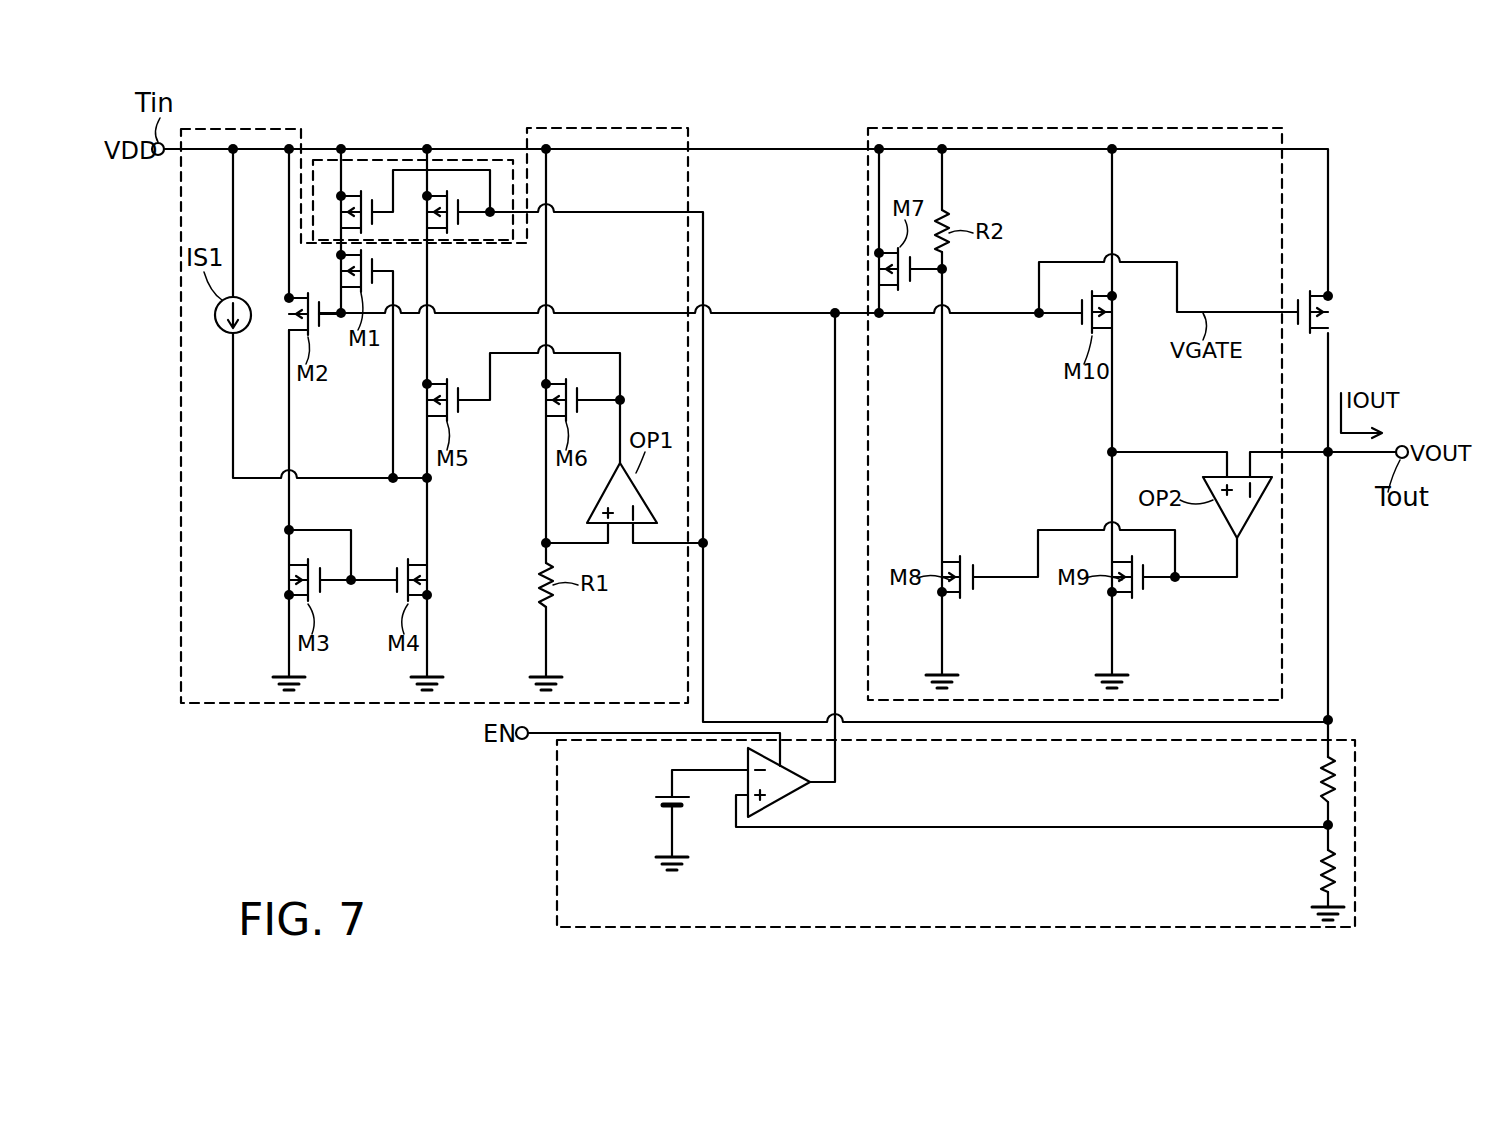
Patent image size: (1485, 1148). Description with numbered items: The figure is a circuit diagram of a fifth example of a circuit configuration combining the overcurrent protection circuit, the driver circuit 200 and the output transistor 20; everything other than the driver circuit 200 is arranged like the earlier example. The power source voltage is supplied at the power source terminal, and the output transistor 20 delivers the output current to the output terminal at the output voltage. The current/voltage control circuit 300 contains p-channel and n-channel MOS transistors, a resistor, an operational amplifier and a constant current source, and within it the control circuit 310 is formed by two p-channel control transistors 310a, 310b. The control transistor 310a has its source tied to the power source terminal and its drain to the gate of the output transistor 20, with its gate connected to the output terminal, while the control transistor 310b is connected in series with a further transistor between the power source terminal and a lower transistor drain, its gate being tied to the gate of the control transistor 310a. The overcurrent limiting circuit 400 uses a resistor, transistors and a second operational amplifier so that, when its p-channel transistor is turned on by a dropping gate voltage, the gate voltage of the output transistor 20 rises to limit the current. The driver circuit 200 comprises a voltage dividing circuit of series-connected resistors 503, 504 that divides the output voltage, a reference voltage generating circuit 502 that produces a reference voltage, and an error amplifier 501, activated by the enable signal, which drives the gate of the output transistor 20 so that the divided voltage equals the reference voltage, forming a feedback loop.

The output transistor 20 is at (1331, 318).
The driver circuit 200 is at (556, 806).
The current/voltage control circuit 300 is at (614, 128).
The control circuit 310 is at (474, 148).
The control transistor 310a is at (372, 220).
The control transistor 310b is at (460, 226).
The overcurrent limiting circuit 400 is at (1069, 128).
The error amplifier 501 is at (780, 802).
The reference voltage generating circuit 502 is at (660, 797).
The resistor 503 is at (1322, 778).
The resistor 504 is at (1322, 870).